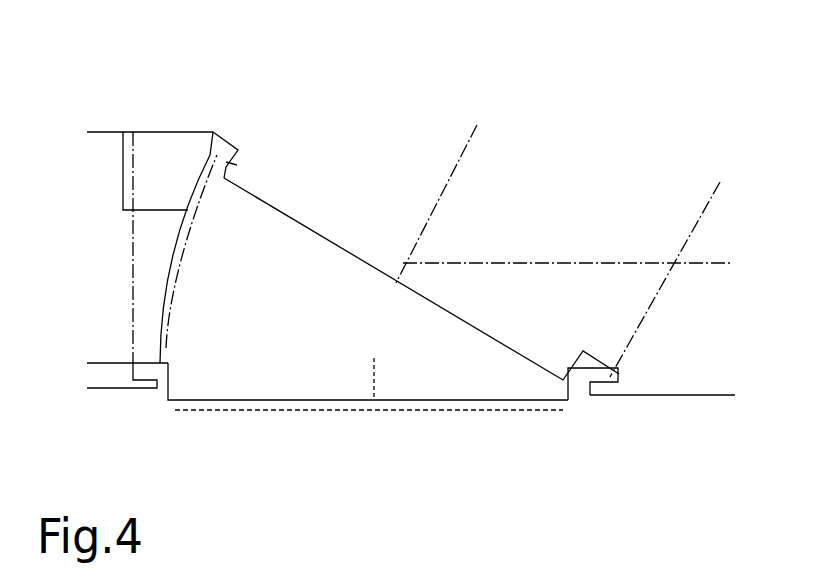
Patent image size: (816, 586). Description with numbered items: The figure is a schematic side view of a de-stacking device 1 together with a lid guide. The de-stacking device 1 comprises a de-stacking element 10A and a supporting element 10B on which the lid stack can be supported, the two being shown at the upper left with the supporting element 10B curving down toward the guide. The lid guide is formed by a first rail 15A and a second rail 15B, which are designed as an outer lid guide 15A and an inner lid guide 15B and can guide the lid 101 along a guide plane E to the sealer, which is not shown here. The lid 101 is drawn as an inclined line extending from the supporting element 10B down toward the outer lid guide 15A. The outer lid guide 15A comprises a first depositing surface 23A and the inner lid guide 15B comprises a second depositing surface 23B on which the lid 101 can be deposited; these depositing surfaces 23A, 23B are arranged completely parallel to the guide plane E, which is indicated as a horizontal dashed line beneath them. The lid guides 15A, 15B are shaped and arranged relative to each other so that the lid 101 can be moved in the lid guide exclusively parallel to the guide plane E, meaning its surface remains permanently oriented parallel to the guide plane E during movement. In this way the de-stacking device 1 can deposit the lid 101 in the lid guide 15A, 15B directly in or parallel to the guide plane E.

The de-stacking device 1 is at (168, 86).
The de-stacking element 10A is at (100, 162).
The supporting element 10B is at (178, 168).
The lid 101 is at (308, 228).
The second rail 15B is at (112, 372).
The second depositing surface 23B is at (150, 383).
The guide plane E is at (293, 410).
The first depositing surface 23A is at (592, 382).
The first rail 15A is at (635, 370).